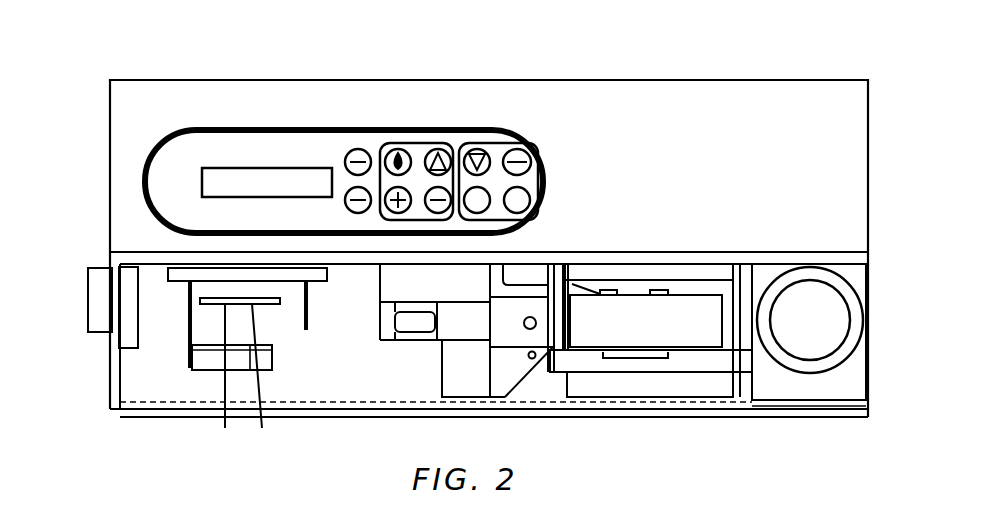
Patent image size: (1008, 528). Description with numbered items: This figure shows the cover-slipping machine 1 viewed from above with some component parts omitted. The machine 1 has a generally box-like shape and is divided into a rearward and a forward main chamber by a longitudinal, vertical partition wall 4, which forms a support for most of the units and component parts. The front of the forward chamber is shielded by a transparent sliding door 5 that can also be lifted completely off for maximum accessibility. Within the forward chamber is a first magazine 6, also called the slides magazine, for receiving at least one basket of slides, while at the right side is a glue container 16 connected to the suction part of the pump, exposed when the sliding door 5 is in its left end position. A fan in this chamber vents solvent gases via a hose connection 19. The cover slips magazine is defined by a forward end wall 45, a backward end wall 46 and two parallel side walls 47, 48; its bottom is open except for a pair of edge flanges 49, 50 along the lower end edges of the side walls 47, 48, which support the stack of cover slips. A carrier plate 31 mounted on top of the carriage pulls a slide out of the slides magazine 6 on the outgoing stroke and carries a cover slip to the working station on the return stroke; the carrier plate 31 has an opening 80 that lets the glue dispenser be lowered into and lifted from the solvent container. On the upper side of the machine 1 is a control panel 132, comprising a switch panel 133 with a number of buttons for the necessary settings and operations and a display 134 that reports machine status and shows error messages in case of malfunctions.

The machine 1 is at (694, 79).
The control panel 132 is at (366, 130).
The switch panel 133 is at (455, 129).
The display 134 is at (272, 178).
The hose connection 19 is at (101, 332).
The forward end wall 45 is at (307, 308).
The backward end wall 46 is at (188, 330).
The side wall 47 is at (206, 289).
The side wall 48 is at (208, 362).
The edge flange 49 is at (224, 383).
The edge flange 50 is at (270, 383).
The carrier plate 31 is at (427, 341).
The opening 80 is at (524, 322).
The first magazine 6 is at (645, 270).
The partition wall 4 is at (783, 258).
The glue container 16 is at (848, 348).
The sliding door 5 is at (771, 412).